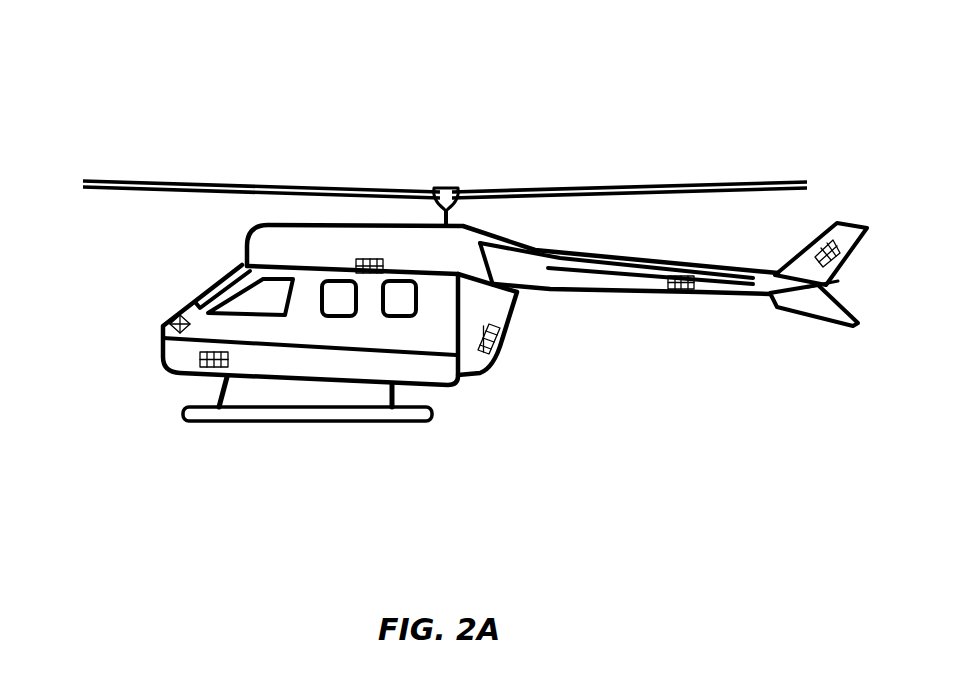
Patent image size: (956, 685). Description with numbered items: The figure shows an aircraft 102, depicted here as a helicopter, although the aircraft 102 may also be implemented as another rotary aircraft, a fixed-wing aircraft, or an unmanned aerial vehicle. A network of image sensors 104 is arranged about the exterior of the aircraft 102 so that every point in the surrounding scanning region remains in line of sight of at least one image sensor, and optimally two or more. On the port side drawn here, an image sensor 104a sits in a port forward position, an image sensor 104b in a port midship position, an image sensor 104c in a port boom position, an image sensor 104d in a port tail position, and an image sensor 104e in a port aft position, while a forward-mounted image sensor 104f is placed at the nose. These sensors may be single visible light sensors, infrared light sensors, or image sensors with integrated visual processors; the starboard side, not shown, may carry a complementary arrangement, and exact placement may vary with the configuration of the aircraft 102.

The aircraft 102 is at (63, 58).
The network of image sensors 104 is at (804, 405).
The image sensor 104a is at (207, 369).
The image sensor 104b is at (370, 258).
The image sensor 104c is at (686, 296).
The image sensor 104d is at (806, 254).
The image sensor 104e is at (505, 337).
The image sensor 104f is at (178, 316).